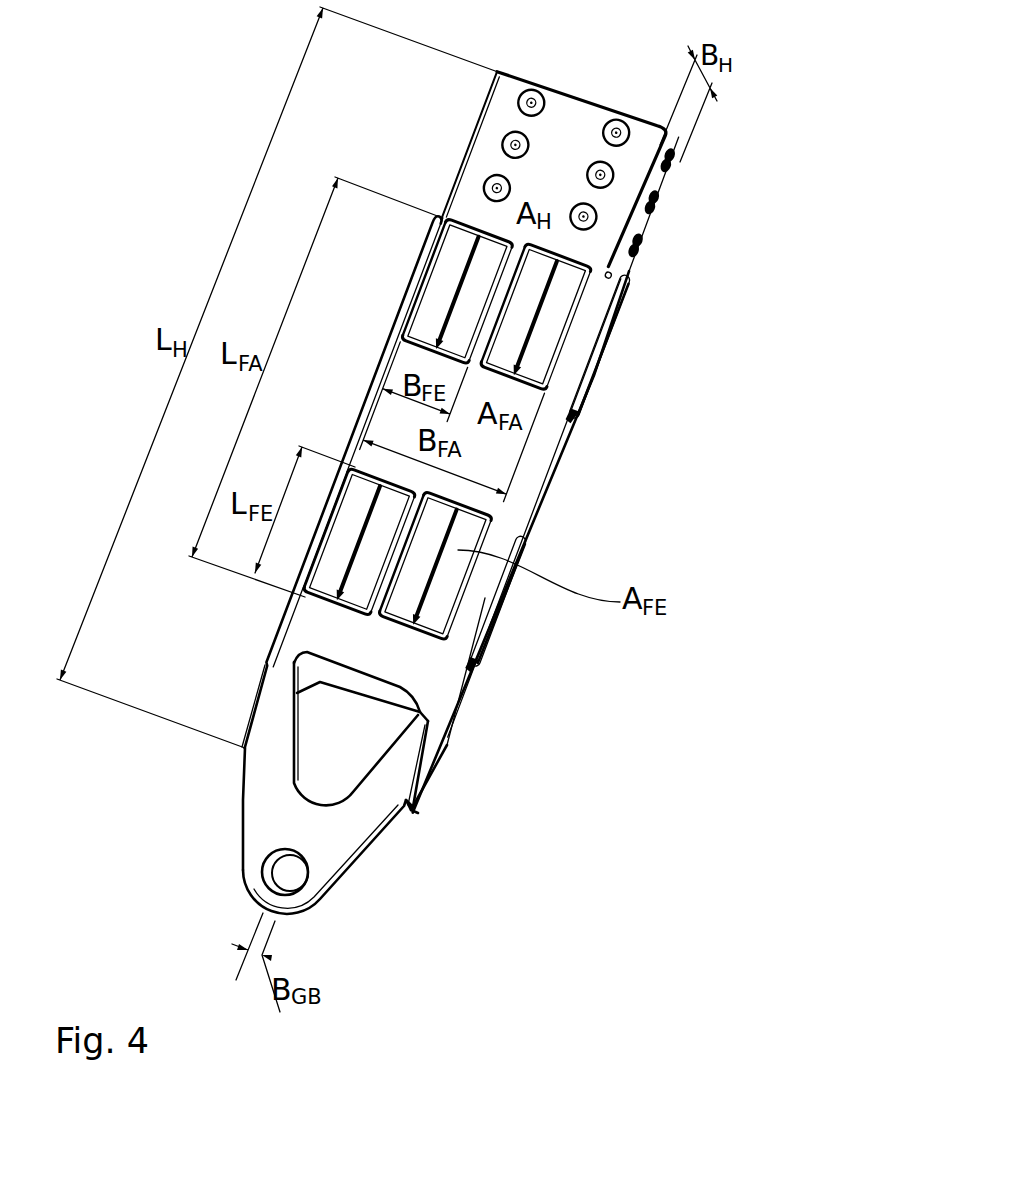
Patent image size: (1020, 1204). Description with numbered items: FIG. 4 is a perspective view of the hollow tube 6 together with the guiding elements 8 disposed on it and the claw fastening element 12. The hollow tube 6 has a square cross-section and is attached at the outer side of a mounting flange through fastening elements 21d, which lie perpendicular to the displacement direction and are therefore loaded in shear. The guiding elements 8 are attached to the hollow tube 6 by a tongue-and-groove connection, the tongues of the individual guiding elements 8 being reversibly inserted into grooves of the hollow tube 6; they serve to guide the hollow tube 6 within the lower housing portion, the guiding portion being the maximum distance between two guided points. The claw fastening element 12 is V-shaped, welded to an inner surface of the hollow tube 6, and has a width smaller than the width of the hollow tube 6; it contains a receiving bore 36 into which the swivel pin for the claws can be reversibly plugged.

The hollow tube 6 is at (540, 478).
The guiding elements 8 is at (490, 268).
The claw fastening element 12 is at (345, 830).
The fastening elements 21d is at (536, 106).
The receiving bore 36 is at (283, 872).